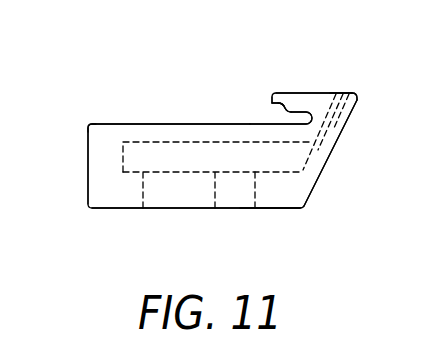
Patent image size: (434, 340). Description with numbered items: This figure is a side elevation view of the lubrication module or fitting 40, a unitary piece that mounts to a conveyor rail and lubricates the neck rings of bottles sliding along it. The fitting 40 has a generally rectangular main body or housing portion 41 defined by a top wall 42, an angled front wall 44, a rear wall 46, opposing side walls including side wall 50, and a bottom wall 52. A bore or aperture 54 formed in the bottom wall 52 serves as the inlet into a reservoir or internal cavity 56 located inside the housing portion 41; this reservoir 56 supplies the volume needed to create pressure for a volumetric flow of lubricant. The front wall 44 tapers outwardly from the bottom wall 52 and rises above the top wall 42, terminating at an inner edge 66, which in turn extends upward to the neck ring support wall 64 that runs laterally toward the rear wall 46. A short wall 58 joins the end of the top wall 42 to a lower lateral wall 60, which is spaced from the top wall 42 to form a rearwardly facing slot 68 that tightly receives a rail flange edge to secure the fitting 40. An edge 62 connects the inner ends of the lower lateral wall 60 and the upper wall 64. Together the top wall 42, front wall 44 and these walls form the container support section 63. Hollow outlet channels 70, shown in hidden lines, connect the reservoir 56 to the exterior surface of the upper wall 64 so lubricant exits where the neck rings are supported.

The lubrication module or fitting 40 is at (116, 98).
The main body or housing portion 41 is at (89, 125).
The top wall 42 is at (143, 124).
The angled front wall 44 is at (332, 151).
The rear wall 46 is at (87, 165).
The side wall 50 is at (285, 190).
The bottom wall 52 is at (173, 210).
The bore or aperture 54 is at (183, 187).
The reservoir or internal cavity 56 is at (243, 155).
The short wall 58 is at (268, 118).
The lower lateral wall 60 is at (272, 118).
The edge 62 is at (270, 100).
The container support section 63 is at (343, 93).
The wall 64 is at (296, 93).
The inner edge 66 is at (358, 100).
The slot 68 is at (262, 111).
The hollow outlet channels 70 is at (352, 120).